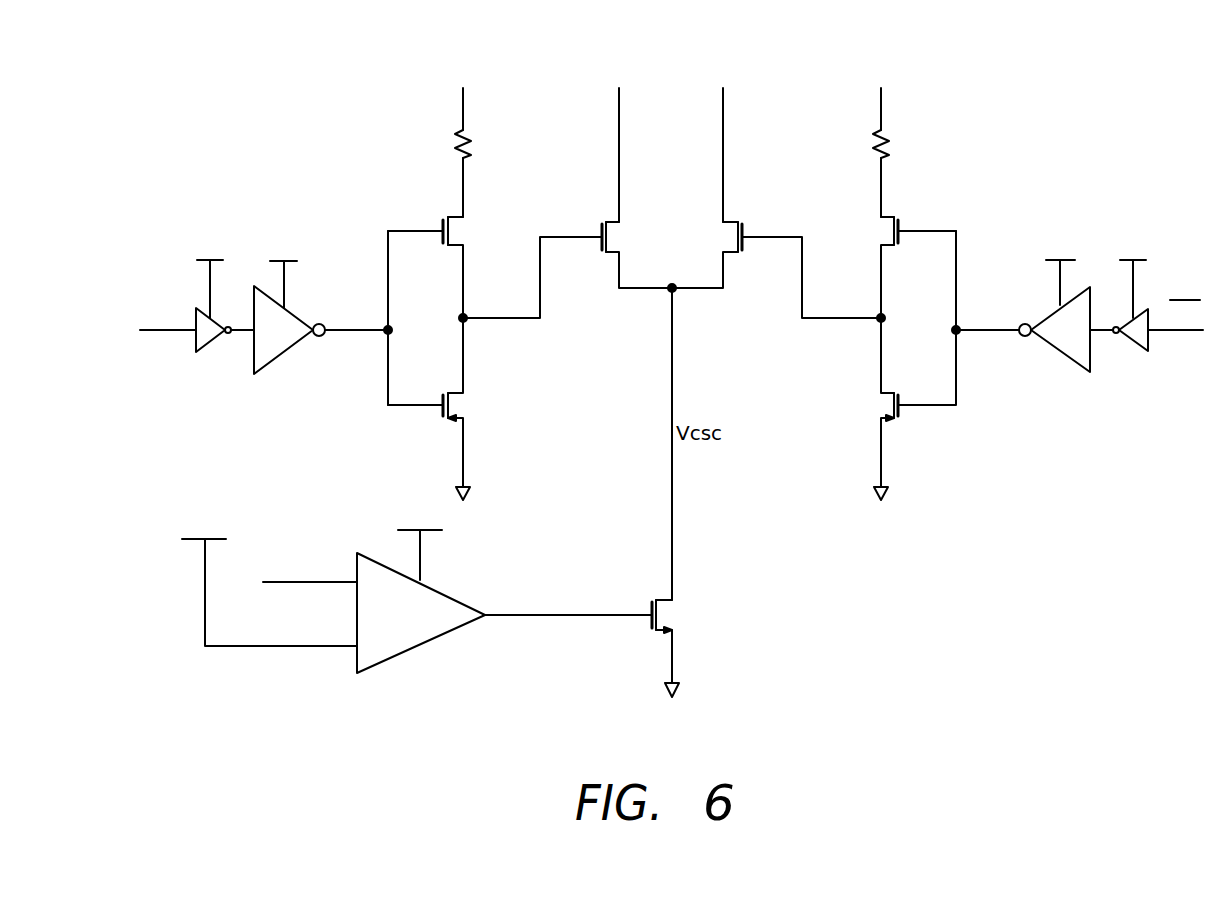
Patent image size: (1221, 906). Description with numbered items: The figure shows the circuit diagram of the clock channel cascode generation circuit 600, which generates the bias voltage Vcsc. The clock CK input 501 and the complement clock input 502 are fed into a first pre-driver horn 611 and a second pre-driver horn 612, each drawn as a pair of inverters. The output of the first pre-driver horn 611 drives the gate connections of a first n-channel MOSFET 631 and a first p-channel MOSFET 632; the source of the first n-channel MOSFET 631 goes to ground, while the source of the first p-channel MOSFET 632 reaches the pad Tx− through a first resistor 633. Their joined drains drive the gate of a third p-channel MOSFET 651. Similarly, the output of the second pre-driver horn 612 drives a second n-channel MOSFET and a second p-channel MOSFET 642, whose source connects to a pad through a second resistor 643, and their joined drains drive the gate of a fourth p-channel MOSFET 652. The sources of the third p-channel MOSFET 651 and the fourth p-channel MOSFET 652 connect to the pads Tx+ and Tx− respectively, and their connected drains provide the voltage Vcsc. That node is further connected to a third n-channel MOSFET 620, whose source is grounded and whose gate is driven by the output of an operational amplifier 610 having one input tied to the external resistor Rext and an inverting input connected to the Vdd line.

The clock channel cascode generation circuit 600 is at (271, 133).
The clock input CK 501 is at (165, 300).
The complementary clock input CK-bar 502 is at (1192, 297).
The first pre-driver horn 611 is at (333, 372).
The second pre-driver horn 612 is at (1186, 370).
The first n-channel MOSFET 631 is at (455, 422).
The first p-channel MOSFET 632 is at (460, 214).
The first resistor 633 is at (461, 133).
The third p-channel MOSFET 651 is at (613, 220).
The fourth p-channel MOSFET 652 is at (728, 220).
The second p-channel MOSFET 642 is at (892, 214).
The second resistor 643 is at (878, 133).
The operational amplifier 610 is at (408, 650).
The third n-channel MOSFET 620 is at (667, 598).